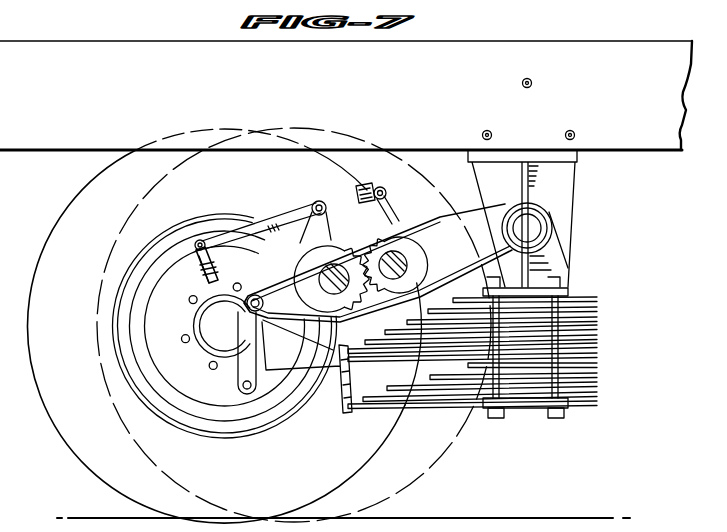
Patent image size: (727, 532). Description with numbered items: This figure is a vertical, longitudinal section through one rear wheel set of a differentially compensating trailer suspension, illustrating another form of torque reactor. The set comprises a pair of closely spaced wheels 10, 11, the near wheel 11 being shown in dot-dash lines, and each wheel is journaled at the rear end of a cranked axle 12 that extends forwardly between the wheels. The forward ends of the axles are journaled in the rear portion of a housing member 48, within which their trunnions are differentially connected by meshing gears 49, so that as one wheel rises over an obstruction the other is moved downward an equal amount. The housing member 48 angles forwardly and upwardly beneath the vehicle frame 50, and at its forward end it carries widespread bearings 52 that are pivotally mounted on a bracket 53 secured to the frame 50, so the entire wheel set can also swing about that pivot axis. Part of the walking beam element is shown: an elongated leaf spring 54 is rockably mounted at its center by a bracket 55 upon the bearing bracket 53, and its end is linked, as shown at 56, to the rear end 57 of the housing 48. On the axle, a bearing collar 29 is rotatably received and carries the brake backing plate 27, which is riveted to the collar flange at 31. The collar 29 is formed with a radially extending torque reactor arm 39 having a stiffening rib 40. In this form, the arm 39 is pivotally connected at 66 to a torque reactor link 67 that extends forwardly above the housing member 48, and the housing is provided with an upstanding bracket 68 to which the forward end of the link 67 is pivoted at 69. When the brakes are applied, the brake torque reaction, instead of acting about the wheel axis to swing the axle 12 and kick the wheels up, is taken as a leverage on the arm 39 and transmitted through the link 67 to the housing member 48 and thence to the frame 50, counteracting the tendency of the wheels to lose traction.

The wheel 10 is at (86, 465).
The wheel 11 is at (430, 470).
The cranked axle 12 is at (283, 334).
The backing plate 27 is at (150, 347).
The bearing collar 29 is at (194, 353).
The rivets 31 is at (182, 336).
The torque reactor arm 39 is at (196, 262).
The stiffening rib 40 is at (200, 278).
The housing member 48 is at (411, 216).
The meshing gears 49 is at (425, 253).
The frame 50 is at (659, 146).
The bearings 52 is at (553, 219).
The bracket 53 is at (567, 178).
The leaf spring 54 is at (528, 392).
The bracket 55 is at (556, 264).
The link 56 is at (233, 376).
The rear end of housing 57 is at (257, 295).
The pivot 66 is at (201, 240).
The torque reactor link 67 is at (275, 219).
The upstanding bracket 68 is at (376, 218).
The pivot 69 is at (320, 202).